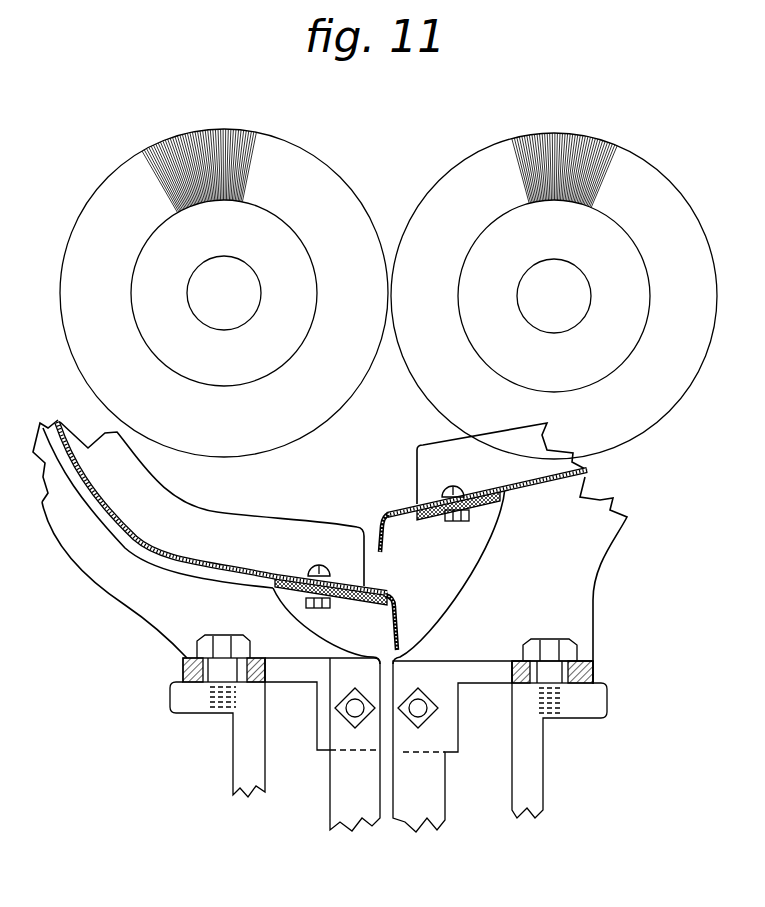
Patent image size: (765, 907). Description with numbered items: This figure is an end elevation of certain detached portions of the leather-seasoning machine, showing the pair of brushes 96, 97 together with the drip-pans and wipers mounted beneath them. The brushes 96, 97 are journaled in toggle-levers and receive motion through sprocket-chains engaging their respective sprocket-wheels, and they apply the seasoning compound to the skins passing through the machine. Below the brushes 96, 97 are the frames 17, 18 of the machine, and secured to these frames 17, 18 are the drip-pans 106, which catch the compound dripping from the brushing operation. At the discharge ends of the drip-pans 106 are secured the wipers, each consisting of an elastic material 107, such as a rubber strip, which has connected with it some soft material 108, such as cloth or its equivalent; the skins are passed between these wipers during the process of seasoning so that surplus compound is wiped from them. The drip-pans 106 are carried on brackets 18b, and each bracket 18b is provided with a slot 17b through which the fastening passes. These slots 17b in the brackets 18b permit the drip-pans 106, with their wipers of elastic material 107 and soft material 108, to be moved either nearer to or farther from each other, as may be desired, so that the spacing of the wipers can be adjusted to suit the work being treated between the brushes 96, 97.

The brush 96 is at (224, 279).
The brush 97 is at (554, 280).
The bracket 18b is at (339, 552).
The drip-pan 106 is at (322, 513).
The elastic material 107 is at (357, 601).
The soft material 108 is at (383, 545).
The slot 17b is at (183, 670).
The frame 17 is at (247, 767).
The frame 18 is at (528, 762).